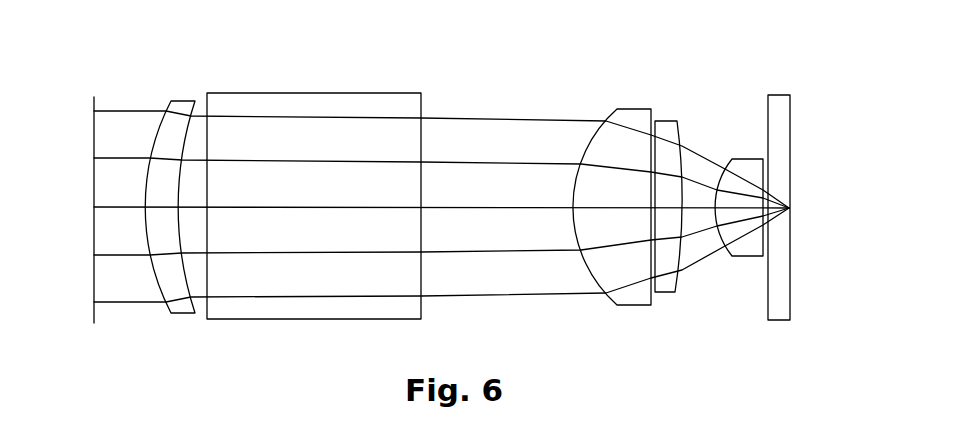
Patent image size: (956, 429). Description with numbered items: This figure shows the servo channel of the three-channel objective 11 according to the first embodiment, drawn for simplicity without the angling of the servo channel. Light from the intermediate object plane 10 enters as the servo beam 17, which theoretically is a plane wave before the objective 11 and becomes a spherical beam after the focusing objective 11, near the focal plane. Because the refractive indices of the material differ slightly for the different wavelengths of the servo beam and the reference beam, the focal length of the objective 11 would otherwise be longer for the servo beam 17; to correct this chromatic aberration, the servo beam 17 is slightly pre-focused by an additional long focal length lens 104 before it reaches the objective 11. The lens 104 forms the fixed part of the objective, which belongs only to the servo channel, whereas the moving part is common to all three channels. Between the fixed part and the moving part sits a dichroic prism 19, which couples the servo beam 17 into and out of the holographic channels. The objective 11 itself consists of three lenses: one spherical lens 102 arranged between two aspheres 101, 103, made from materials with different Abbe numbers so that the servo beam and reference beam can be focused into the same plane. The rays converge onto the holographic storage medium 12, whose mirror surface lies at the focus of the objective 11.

The intermediate object plane 10 is at (123, 188).
The long focal length lens 104 is at (192, 234).
The dichroic prism 19 is at (340, 181).
The servo beam 17 is at (441, 231).
The three-channel objective 11 is at (668, 196).
The asphere 101 is at (612, 235).
The spherical lens 102 is at (685, 233).
The asphere 103 is at (732, 235).
The holographic storage medium 12 is at (761, 184).